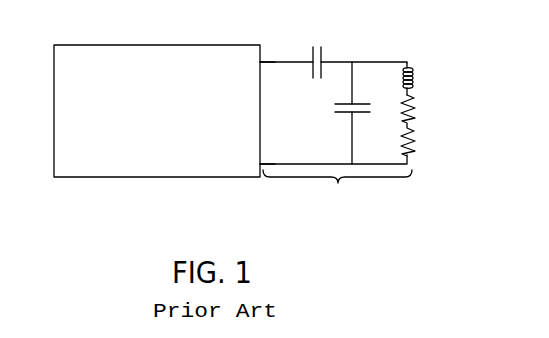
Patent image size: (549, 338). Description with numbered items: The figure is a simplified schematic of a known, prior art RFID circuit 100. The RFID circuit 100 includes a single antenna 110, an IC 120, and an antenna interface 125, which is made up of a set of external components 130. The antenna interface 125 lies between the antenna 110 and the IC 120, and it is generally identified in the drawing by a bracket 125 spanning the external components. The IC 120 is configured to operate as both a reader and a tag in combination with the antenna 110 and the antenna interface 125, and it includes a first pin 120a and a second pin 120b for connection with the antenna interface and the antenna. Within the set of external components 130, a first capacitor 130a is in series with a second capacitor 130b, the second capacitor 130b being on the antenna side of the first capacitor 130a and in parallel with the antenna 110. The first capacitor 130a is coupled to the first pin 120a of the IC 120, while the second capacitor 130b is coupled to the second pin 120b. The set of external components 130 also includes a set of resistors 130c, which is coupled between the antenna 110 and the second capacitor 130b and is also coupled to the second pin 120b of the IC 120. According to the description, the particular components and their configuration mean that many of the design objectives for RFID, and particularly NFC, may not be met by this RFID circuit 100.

The RFID circuit 100 is at (405, 230).
The antenna 110 is at (414, 72).
The IC 120 is at (75, 178).
The first pin 120a is at (259, 63).
The second pin 120b is at (261, 163).
The antenna interface 125 is at (337, 189).
The set of external components 130 is at (375, 43).
The first capacitor 130a is at (312, 52).
The second capacitor 130b is at (343, 113).
The set of resistors 130c is at (417, 138).